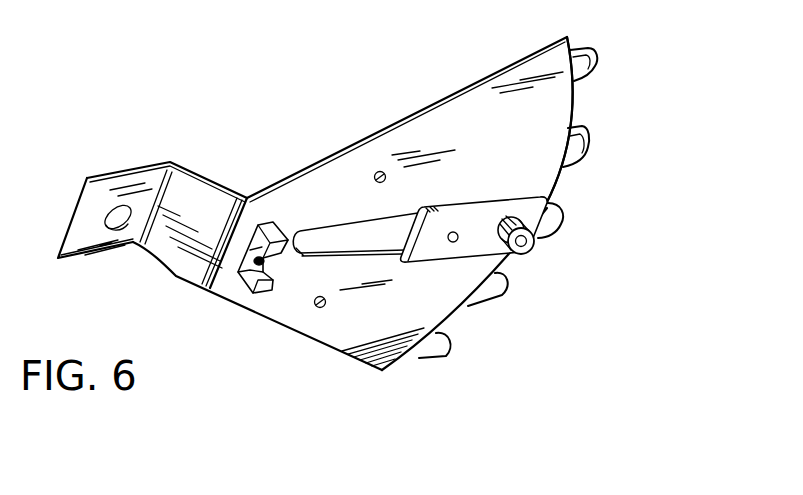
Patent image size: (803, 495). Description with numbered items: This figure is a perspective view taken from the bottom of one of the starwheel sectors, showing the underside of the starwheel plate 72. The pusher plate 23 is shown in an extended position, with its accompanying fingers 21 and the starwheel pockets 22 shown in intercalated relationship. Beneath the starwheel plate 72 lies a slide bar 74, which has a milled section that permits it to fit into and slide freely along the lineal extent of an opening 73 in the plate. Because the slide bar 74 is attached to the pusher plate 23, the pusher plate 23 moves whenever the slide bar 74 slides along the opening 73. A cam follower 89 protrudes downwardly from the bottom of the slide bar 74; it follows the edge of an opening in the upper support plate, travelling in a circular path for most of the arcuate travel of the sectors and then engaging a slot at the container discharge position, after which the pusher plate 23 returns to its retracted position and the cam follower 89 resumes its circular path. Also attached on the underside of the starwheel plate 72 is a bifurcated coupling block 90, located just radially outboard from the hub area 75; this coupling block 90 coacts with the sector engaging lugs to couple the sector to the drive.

The fingers 21 is at (589, 147).
The starwheel pockets 22 is at (575, 100).
The pusher plate 23 is at (587, 48).
The starwheel plate 72 is at (522, 141).
The opening 73 is at (343, 225).
The slide bar 74 is at (430, 263).
The hub area 75 is at (192, 173).
The cam follower 89 is at (527, 252).
The bifurcated coupling block 90 is at (246, 292).